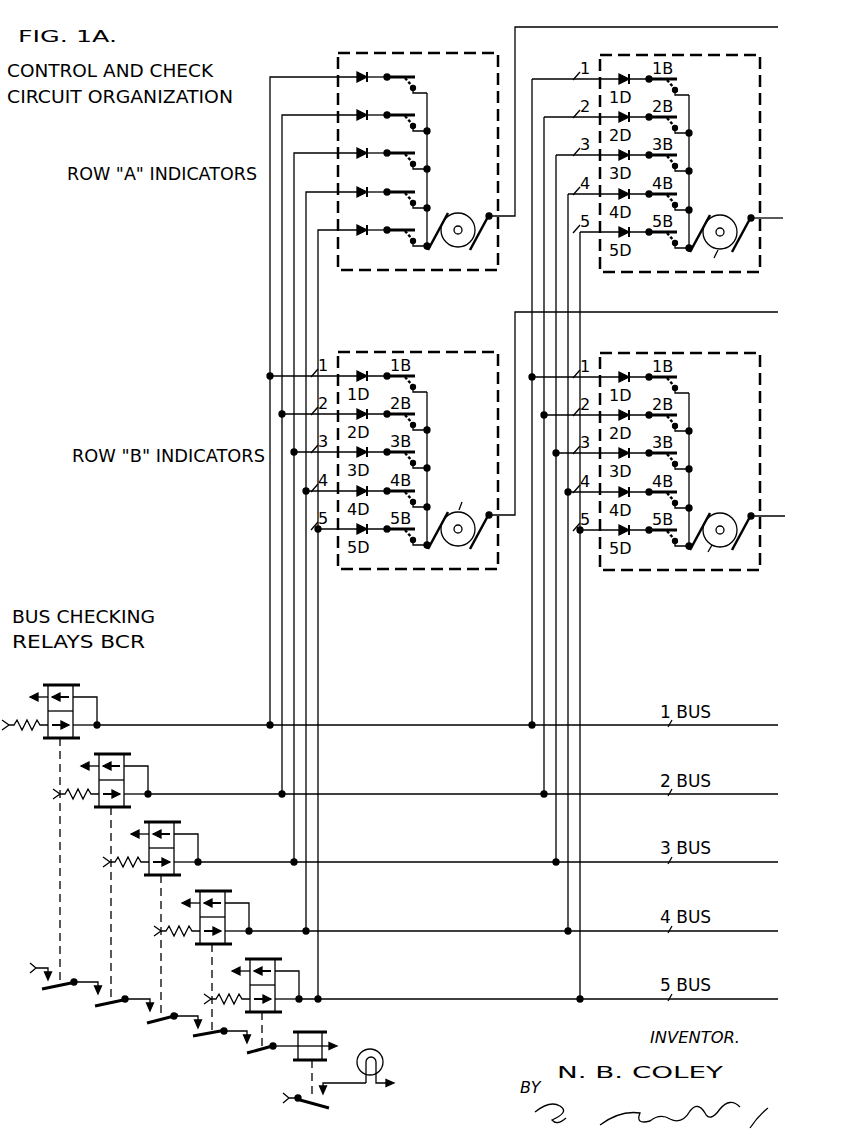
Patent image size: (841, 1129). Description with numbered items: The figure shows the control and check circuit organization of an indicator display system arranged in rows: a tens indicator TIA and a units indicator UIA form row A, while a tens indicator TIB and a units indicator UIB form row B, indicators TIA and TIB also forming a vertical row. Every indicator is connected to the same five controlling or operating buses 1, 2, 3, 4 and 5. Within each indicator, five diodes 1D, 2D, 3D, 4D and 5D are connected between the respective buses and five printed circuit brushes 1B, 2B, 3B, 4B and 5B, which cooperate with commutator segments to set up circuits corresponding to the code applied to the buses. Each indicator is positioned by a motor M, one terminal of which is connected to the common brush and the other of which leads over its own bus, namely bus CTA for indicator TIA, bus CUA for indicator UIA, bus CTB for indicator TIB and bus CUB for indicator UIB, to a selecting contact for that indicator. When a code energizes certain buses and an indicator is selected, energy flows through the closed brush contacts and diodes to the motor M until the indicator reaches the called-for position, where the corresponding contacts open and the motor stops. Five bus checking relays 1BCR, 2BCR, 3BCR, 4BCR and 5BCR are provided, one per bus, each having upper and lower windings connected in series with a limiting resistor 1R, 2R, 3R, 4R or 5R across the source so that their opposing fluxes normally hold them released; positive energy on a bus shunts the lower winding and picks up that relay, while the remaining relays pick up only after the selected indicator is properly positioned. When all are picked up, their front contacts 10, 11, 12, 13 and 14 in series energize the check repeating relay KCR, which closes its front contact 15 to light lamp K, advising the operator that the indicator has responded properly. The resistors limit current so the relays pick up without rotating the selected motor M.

The operating bus 1 is at (311, 78).
The operating bus 2 is at (311, 116).
The operating bus 3 is at (311, 154).
The operating bus 4 is at (311, 193).
The operating bus 5 is at (311, 231).
The front contact of relay 1BCR 10 is at (66, 985).
The front contact of relay 2BCR 11 is at (112, 1002).
The front contact of relay 3BCR 12 is at (164, 1019).
The front contact of relay 4BCR 13 is at (214, 1033).
The front contact of relay 5BCR 14 is at (264, 1049).
The front contact of relay KCR 15 is at (316, 1102).
The brush 1B is at (405, 75).
The brush 2B is at (405, 113).
The brush 3B is at (405, 151).
The brush 4B is at (405, 190).
The brush 5B is at (405, 228).
The diode 1D is at (367, 88).
The diode 2D is at (367, 126).
The diode 3D is at (367, 164).
The diode 4D is at (367, 203).
The diode 5D is at (367, 241).
The bus checking relay 1BCR is at (64, 677).
The bus checking relay 2BCR is at (115, 746).
The bus checking relay 3BCR is at (165, 814).
The bus checking relay 4BCR is at (216, 883).
The bus checking relay 5BCR is at (266, 951).
The limiting resistor 1R is at (32, 732).
The limiting resistor 2R is at (83, 793).
The limiting resistor 3R is at (131, 862).
The limiting resistor 4R is at (181, 931).
The limiting resistor 5R is at (231, 999).
The check repeating relay KCR is at (315, 1025).
The lamp K is at (380, 1057).
The motor M is at (456, 213).
The tens indicator of row A TIA is at (382, 516).
The units indicator of row A UIA is at (608, 55).
The tens indicator of row B TIB is at (345, 352).
The units indicator of row B UIB is at (605, 353).
The bus CTA is at (728, 28).
The bus CTB is at (728, 313).
The bus wire CUA is at (783, 213).
The bus wire CUB is at (785, 516).